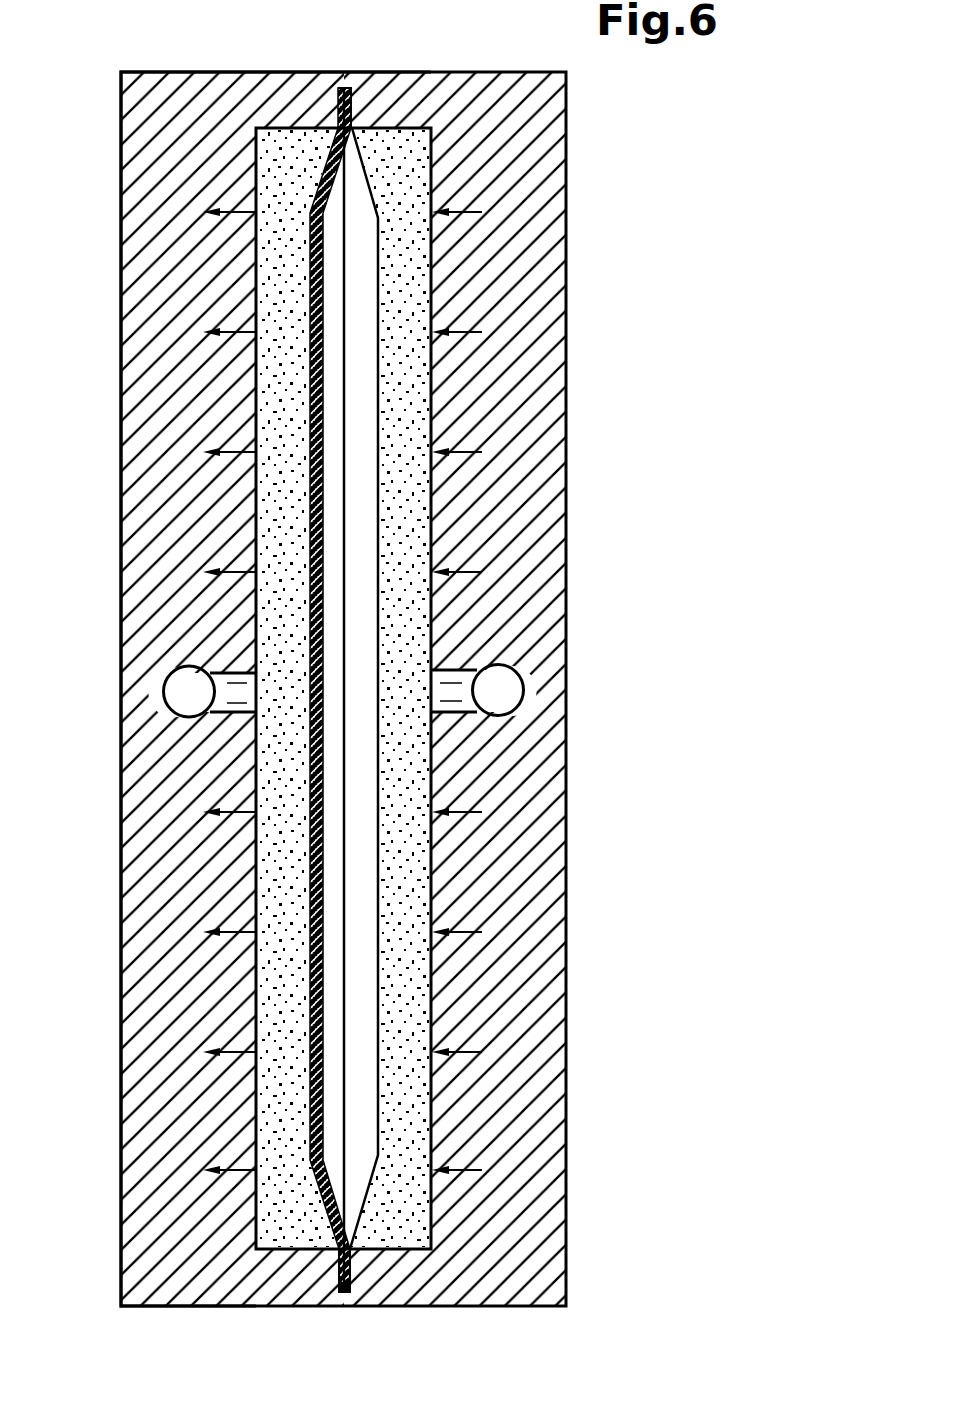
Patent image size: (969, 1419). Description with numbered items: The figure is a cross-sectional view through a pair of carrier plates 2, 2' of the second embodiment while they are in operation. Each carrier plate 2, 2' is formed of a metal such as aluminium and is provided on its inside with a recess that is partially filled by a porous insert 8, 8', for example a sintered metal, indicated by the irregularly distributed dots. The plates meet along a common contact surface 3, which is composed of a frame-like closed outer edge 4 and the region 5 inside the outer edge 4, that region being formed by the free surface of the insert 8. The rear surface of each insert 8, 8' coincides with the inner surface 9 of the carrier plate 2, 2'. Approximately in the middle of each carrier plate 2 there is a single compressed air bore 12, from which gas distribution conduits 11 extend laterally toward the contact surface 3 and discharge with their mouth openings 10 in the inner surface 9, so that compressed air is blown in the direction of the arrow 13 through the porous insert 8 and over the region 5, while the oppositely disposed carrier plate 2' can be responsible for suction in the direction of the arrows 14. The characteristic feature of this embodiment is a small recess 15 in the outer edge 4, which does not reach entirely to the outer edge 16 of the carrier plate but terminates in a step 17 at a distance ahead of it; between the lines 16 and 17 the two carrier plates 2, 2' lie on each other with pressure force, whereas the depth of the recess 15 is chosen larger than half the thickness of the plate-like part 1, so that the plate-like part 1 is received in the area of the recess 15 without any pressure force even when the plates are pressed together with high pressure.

The plate-like part 1 is at (345, 104).
The carrier plate 2 is at (371, 689).
The carrier plate 2' is at (159, 689).
The contact surface 3 is at (347, 1010).
The outer edge 4 is at (305, 1284).
The region inside the outer edge 5 is at (380, 398).
The insert 8 is at (478, 688).
The insert 8' is at (202, 688).
The inner surface 9 is at (432, 180).
The mouth opening 10 is at (270, 705).
The gas distribution conduit 11 is at (483, 673).
The compressed air bore 12 is at (164, 684).
The arrow 13 is at (440, 1165).
The arrows 14 is at (223, 1177).
The recess 15 is at (352, 1288).
The outer edge of the carrier plate 16 is at (491, 72).
The step 17 is at (348, 88).